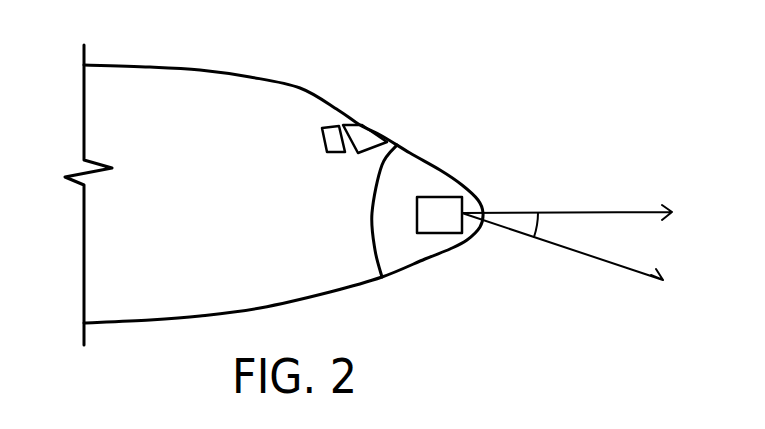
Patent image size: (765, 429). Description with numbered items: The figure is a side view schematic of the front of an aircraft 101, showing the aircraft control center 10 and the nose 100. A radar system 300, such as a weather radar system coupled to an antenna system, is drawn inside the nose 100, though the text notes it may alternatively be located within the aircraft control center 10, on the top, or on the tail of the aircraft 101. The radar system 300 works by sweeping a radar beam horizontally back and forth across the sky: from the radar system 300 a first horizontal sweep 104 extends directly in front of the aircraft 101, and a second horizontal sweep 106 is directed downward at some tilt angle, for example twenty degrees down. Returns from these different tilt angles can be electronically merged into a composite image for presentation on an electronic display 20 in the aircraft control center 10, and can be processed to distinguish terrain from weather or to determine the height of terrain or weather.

The aircraft control center 10 is at (300, 88).
The nose 100 is at (427, 171).
The radar system 300 is at (448, 221).
The first horizontal sweep 104 is at (607, 212).
The second horizontal sweep 106 is at (622, 266).
The electronic display 20 is at (538, 222).
The aircraft 101 is at (513, 63).